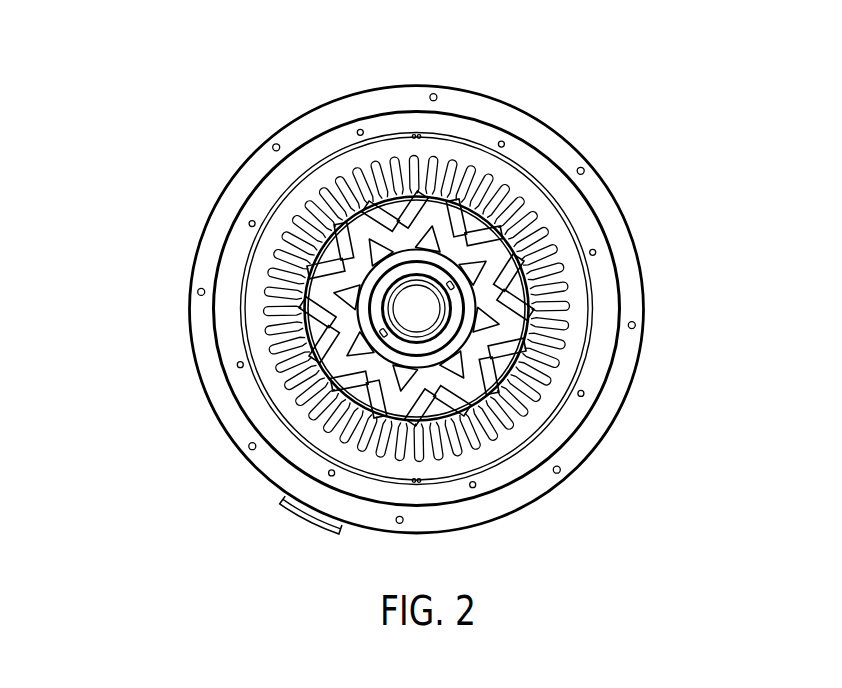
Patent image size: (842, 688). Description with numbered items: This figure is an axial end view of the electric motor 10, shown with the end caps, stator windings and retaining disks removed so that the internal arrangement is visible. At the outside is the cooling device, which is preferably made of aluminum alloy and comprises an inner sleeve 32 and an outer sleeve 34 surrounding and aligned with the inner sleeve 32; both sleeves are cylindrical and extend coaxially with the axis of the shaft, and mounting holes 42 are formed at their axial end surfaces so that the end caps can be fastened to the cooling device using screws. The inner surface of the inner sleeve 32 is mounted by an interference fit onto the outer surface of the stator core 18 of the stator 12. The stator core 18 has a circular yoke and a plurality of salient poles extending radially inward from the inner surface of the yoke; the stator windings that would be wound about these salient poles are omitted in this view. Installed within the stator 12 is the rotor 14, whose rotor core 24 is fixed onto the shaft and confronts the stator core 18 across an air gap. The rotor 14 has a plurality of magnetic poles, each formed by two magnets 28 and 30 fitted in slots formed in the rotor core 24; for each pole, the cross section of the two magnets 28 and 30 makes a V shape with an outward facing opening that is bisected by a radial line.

The electric motor 10 is at (416, 270).
The stator 12 is at (250, 256).
The rotor 14 is at (352, 213).
The stator core 18 is at (284, 222).
The rotor core 24 is at (548, 393).
The magnet 28 is at (305, 306).
The magnet 30 is at (307, 377).
The inner sleeve 32 is at (575, 200).
The outer sleeve 34 is at (548, 142).
The mounting holes 42 is at (590, 392).